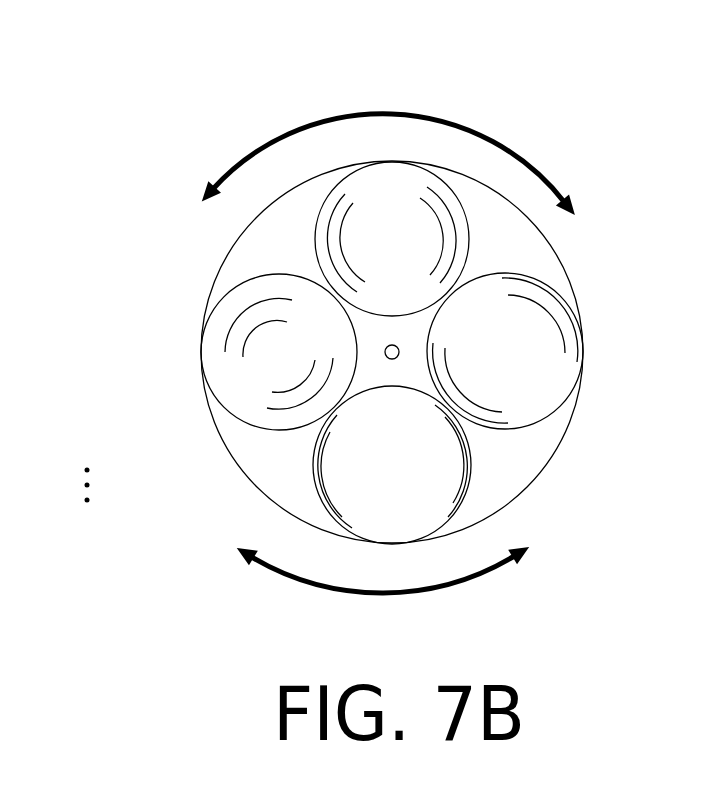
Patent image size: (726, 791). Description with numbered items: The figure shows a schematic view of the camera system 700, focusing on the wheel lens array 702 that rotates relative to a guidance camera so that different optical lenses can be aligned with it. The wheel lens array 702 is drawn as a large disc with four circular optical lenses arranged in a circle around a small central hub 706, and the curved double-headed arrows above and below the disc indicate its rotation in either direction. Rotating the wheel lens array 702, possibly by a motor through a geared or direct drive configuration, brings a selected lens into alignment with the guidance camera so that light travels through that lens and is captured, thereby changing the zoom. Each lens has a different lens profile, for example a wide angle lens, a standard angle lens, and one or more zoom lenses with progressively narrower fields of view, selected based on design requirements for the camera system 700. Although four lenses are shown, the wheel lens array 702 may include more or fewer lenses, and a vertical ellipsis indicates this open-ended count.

The camera system 700 is at (611, 93).
The wheel lens array 702 is at (212, 283).
The third lens 706 is at (397, 357).